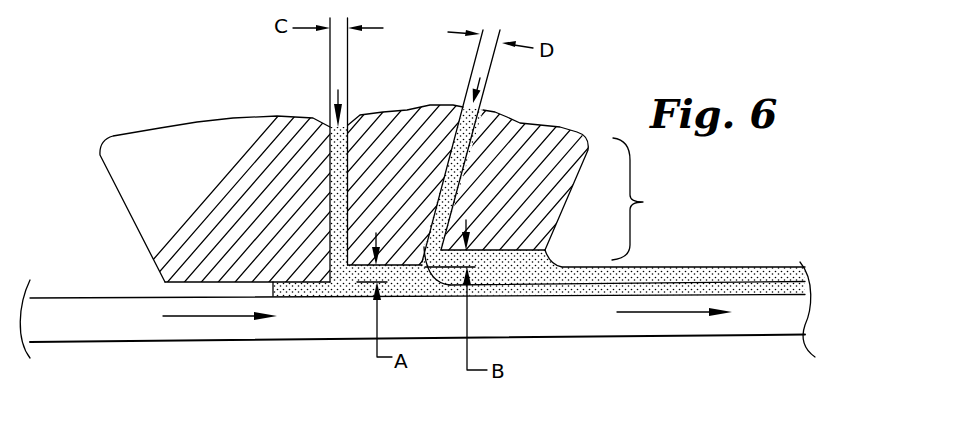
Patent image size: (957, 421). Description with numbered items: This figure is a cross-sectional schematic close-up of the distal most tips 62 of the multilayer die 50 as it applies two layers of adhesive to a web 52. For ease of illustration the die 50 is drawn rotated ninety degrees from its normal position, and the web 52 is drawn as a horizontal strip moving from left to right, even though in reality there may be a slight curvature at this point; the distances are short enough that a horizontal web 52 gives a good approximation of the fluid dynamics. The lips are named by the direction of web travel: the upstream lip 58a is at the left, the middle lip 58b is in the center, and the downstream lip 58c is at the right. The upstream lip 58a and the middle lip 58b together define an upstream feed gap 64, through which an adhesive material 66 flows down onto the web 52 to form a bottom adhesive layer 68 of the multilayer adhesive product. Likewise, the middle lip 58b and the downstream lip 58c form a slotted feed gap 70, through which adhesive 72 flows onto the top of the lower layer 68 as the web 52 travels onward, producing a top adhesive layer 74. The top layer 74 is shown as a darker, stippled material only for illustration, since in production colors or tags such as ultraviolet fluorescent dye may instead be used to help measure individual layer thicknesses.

The multilayer die 50 is at (118, 208).
The web 52 is at (110, 297).
The upstream lip 58a is at (175, 285).
The middle lip 58b is at (396, 267).
The downstream lip 58c is at (500, 267).
The distal most tips 62 is at (646, 199).
The upstream feed gap 64 is at (330, 163).
The adhesive material 66 is at (330, 207).
The bottom adhesive layer 68 is at (711, 282).
The slotted feed gap 70 is at (473, 133).
The adhesive 72 is at (470, 162).
The top adhesive layer 74 is at (675, 267).